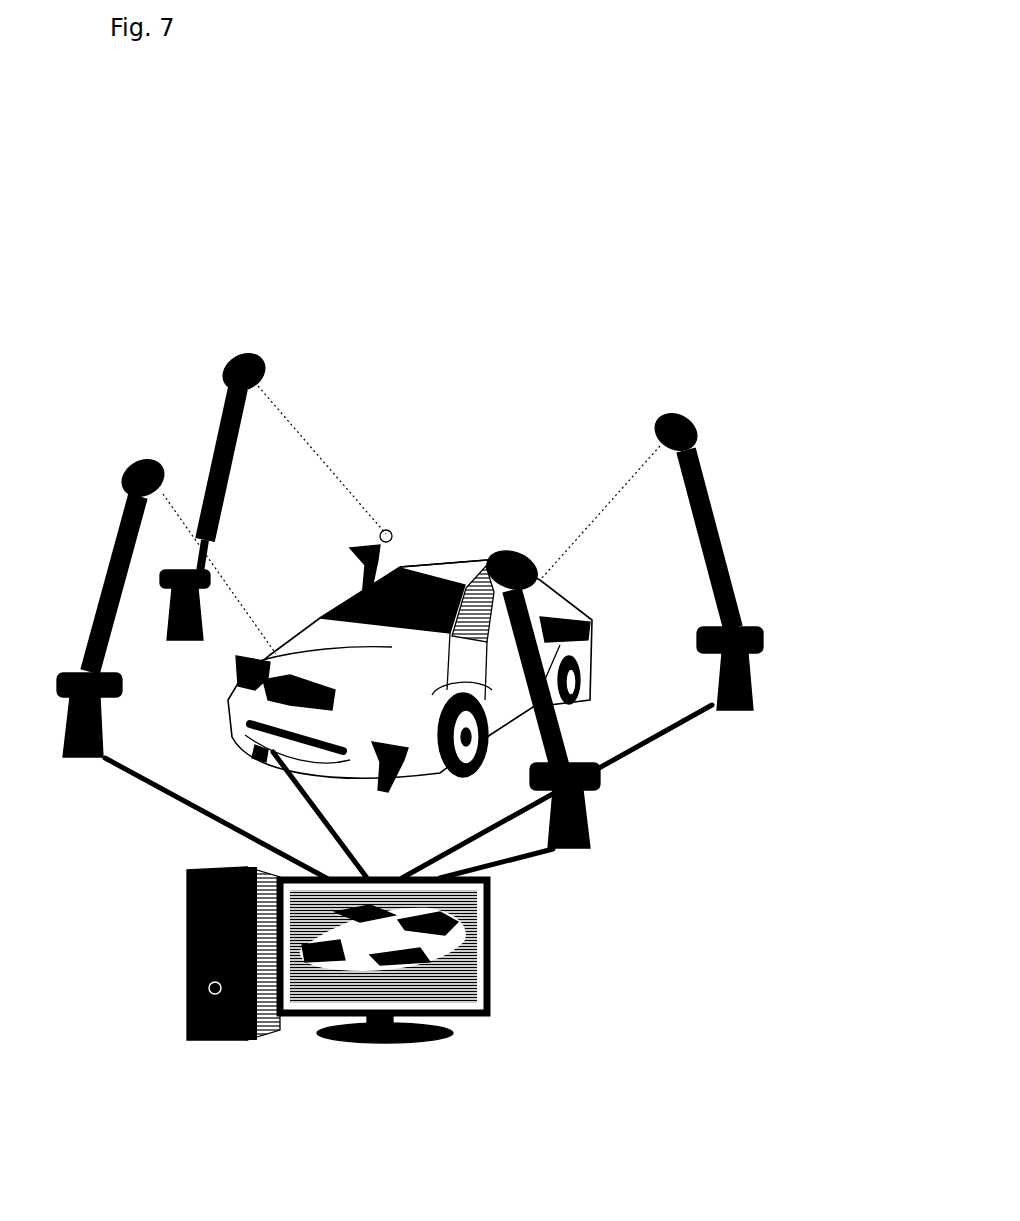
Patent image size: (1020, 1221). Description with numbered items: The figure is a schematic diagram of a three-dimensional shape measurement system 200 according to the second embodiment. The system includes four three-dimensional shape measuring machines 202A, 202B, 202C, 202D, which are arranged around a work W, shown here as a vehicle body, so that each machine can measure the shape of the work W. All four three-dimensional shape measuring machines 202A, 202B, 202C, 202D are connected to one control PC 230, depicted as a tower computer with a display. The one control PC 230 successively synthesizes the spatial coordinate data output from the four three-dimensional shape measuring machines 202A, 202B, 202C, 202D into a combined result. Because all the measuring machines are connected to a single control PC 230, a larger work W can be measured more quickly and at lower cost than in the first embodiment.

The three-dimensional shape measurement system 200 is at (600, 366).
The three-dimensional shape measuring machine 202A is at (292, 388).
The three-dimensional shape measuring machine 202B is at (220, 546).
The three-dimensional shape measuring machine 202C is at (712, 498).
The three-dimensional shape measuring machine 202D is at (568, 713).
The work W is at (430, 550).
The control PC 230 is at (496, 926).